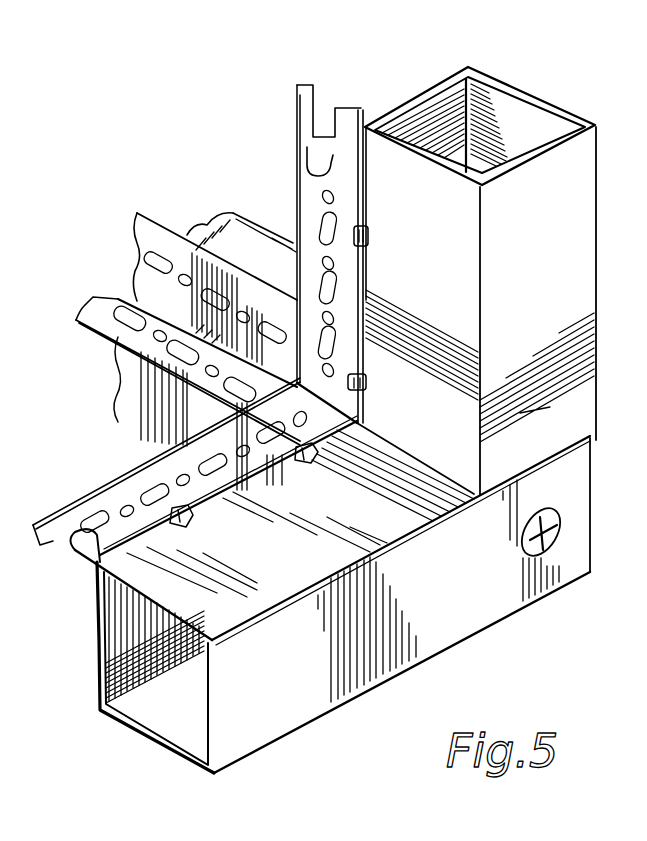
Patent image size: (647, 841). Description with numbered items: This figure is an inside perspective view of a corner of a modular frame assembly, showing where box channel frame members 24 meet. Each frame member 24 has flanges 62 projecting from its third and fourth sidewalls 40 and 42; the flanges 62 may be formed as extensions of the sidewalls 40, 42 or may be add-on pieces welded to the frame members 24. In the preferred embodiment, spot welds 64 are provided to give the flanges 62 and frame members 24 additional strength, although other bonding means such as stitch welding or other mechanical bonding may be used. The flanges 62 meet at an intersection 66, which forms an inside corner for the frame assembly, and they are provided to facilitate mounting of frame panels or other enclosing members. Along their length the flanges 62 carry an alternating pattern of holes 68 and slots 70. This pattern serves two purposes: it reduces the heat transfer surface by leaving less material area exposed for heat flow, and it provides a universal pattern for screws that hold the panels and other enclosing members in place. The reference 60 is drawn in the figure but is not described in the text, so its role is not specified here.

The frame member 24 is at (573, 220).
The third sidewall 40 is at (452, 245).
The fourth sidewall 42 is at (448, 95).
The corner bracket 60 is at (0, 138).
The flange 62 is at (310, 150).
The spot weld 64 is at (368, 230).
The intersection 66 is at (366, 127).
The hole 68 is at (325, 320).
The slot 70 is at (340, 340).